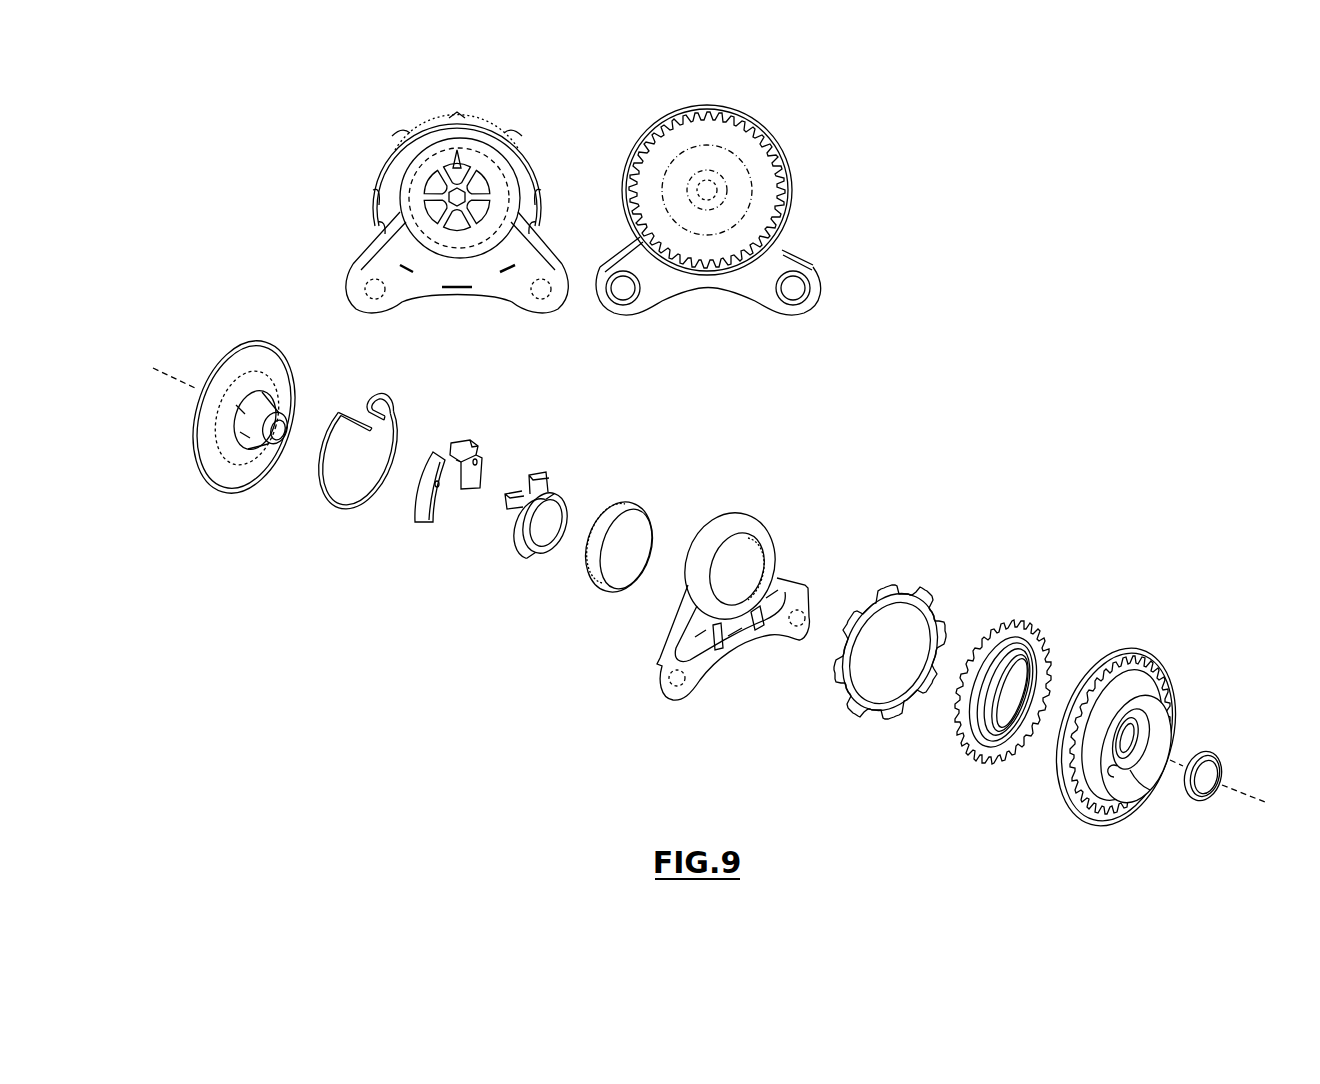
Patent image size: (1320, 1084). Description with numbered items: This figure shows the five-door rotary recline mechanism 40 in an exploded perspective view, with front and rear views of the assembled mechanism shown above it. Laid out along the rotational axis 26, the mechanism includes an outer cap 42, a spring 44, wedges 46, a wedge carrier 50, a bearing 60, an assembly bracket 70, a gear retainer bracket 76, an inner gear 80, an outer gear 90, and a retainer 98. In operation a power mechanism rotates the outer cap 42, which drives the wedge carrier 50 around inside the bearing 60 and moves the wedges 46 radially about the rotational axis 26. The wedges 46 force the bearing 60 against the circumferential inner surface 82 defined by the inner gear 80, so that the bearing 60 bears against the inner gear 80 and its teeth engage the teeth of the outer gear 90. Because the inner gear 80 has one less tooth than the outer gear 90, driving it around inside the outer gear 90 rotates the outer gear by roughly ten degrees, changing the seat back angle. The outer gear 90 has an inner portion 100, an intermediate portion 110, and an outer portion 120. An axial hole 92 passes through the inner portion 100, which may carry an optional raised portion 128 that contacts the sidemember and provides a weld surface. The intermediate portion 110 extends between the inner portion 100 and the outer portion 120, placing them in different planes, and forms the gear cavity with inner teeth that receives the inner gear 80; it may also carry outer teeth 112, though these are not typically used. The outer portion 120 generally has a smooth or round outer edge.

The rotational axis 26 is at (183, 383).
The five-door rotary recline mechanism 40 is at (368, 212).
The outer cap 42 is at (228, 368).
The spring 44 is at (336, 512).
The wedges 46 is at (483, 462).
The wedge carrier 50 is at (566, 498).
The bearing 60 is at (646, 506).
The assembly bracket 70 is at (763, 532).
The gear retainer bracket 76 is at (934, 584).
The inner gear 80 is at (1041, 636).
The circumferential inner surface 82 is at (1015, 670).
The outer gear 90 is at (1101, 737).
The axial hole 92 is at (1131, 762).
The retainer 98 is at (1218, 762).
The inner portion 100 is at (1147, 720).
The intermediate portion 110 is at (1133, 678).
The outer teeth 112 is at (1108, 652).
The outer portion 120 is at (1120, 665).
The raised portion 128 is at (1112, 768).